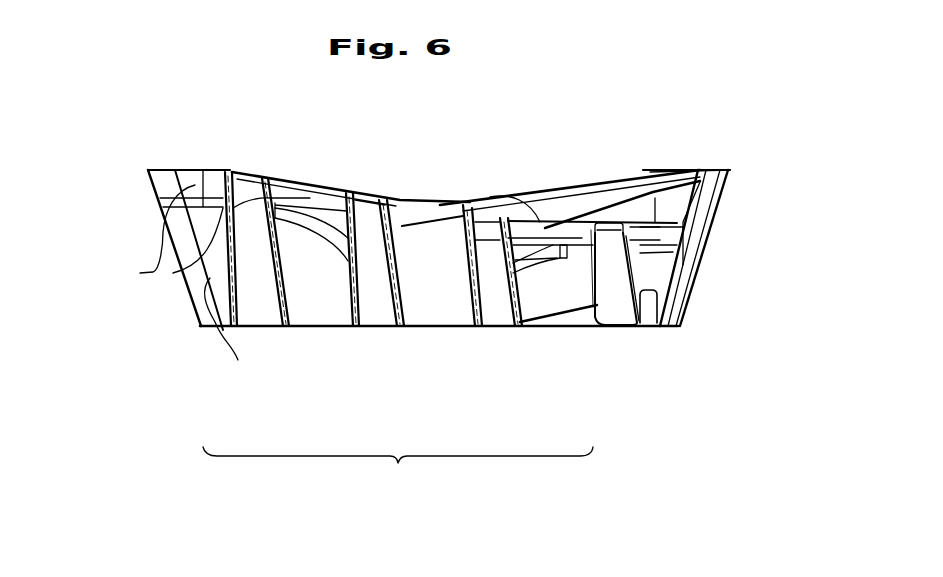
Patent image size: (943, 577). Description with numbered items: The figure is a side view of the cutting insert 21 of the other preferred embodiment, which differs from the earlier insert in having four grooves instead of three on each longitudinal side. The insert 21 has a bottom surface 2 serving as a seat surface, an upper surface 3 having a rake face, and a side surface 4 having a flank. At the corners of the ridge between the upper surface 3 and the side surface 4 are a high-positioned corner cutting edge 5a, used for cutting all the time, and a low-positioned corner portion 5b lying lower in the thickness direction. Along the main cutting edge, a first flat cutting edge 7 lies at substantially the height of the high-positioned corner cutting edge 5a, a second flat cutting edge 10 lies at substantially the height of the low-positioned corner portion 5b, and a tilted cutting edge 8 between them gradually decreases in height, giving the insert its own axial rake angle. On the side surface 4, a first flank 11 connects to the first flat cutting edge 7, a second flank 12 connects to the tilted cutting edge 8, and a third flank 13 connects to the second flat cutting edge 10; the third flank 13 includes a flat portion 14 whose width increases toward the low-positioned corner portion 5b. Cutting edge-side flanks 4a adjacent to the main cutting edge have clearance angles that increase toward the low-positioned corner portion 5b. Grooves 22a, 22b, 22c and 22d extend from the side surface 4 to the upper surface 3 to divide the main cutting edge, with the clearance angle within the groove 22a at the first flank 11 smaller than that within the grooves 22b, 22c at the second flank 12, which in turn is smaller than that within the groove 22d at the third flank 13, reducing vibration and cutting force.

The bottom surface 2 is at (208, 328).
The upper surface 3 is at (580, 193).
The side surface 4 is at (398, 470).
The cutting edge-side flank 4a is at (743, 255).
The high-positioned corner cutting edge 5a is at (146, 171).
The low-positioned corner portion 5b is at (703, 220).
The first flat cutting edge 7 is at (187, 170).
The tilted cutting edge 8 is at (314, 186).
The second flat cutting edge 10 is at (700, 192).
The first flank 11 is at (240, 365).
The second flank 12 is at (437, 302).
The third flank 13 is at (567, 298).
The flat portion 14 is at (646, 317).
The insert 21 is at (712, 158).
The groove 22a is at (257, 315).
The groove 22b is at (376, 305).
The groove 22c is at (493, 310).
The groove 22d is at (612, 295).